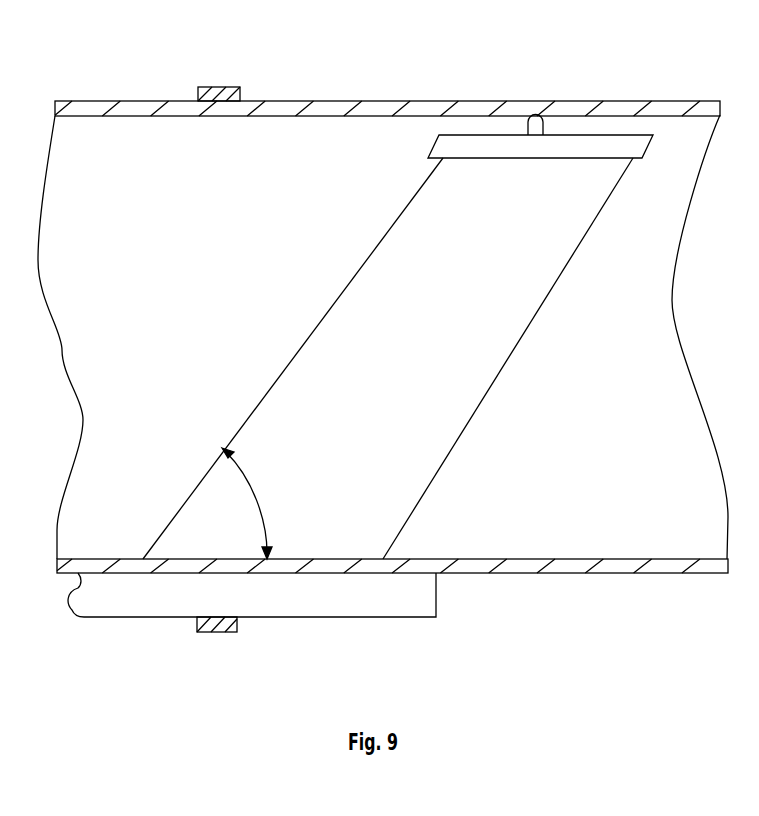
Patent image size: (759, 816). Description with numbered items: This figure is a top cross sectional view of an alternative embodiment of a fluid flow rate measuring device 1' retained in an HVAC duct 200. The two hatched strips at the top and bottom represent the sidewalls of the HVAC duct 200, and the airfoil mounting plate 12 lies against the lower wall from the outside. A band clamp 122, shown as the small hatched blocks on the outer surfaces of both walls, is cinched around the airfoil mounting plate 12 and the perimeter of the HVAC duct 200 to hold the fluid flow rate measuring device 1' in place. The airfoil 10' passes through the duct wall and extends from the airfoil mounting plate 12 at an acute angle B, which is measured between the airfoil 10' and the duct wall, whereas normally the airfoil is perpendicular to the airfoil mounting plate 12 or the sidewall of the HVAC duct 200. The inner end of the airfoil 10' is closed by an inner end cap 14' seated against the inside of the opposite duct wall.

The HVAC duct 200 is at (438, 100).
The fluid flow rate measuring device 1' is at (392, 610).
The band clamp 122 is at (217, 87).
The airfoil mounting plate 12 is at (317, 617).
The inner end cap 14' is at (554, 157).
The airfoil 10' is at (388, 358).
The acute angle B is at (247, 503).